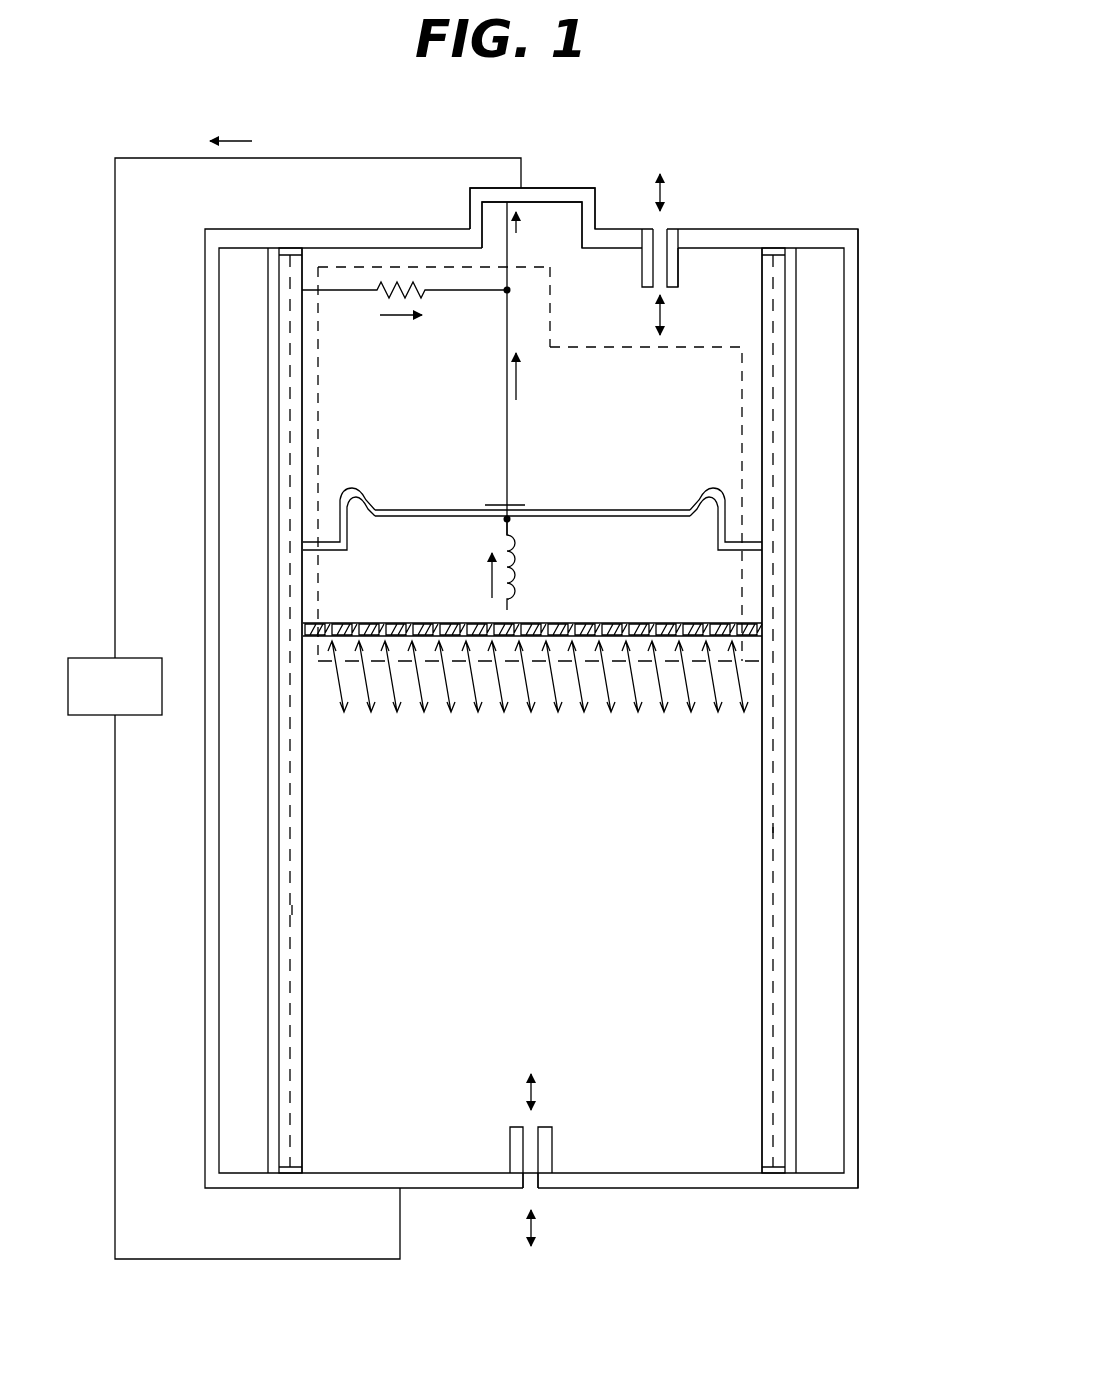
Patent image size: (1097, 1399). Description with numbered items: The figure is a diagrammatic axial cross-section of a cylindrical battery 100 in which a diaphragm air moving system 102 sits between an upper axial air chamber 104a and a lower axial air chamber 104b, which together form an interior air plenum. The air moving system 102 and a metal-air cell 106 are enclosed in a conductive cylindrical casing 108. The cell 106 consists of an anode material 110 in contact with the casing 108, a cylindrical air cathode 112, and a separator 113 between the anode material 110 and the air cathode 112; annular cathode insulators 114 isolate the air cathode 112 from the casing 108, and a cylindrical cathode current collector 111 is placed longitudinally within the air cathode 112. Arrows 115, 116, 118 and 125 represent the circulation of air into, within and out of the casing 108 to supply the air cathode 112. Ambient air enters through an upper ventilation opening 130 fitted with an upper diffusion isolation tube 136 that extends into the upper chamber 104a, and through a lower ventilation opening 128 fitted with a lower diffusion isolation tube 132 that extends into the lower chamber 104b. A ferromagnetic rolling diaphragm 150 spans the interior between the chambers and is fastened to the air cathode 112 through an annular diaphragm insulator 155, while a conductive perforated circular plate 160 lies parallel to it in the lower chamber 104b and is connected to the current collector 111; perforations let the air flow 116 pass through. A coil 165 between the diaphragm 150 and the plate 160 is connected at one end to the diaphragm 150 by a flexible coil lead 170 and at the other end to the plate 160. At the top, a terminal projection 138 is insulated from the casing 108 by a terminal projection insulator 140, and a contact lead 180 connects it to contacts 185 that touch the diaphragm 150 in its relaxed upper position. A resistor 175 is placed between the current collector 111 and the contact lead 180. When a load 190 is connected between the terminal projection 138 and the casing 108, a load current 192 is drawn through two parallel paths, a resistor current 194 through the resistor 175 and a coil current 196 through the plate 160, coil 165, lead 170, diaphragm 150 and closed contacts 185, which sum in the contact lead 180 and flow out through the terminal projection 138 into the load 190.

The cylindrical battery 100 is at (782, 135).
The diaphragm air moving system 102 is at (557, 275).
The upper axial air chamber 104a is at (685, 423).
The lower axial air chamber 104b is at (565, 875).
The metal-air cell 106 is at (318, 1010).
The conductive cylindrical casing 108 is at (858, 430).
The anode material 110 is at (232, 868).
The cathode current collector 111 is at (292, 910).
The air cathode 112 is at (300, 1103).
The separator 113 is at (277, 1057).
The annular cathode insulator 114 is at (292, 257).
The air flow arrow 115 is at (527, 1232).
The air flow 116 is at (547, 682).
The air flow arrow 118 is at (657, 315).
The air flow arrow 125 is at (664, 190).
The lower ventilation opening 128 is at (530, 1188).
The upper ventilation opening 130 is at (662, 230).
The lower diffusion isolation tube 132 is at (552, 1157).
The upper diffusion isolation tube 136 is at (680, 267).
The terminal projection 138 is at (570, 187).
The terminal projection insulator 140 is at (470, 225).
The ferromagnetic rolling diaphragm 150 is at (595, 510).
The annular diaphragm insulator 155 is at (308, 552).
The perforated circular plate 160 is at (455, 622).
The coil 165 is at (520, 548).
The flexible coil lead 170 is at (497, 530).
The resistor 175 is at (377, 285).
The contact lead 180 is at (505, 405).
The contacts 185 is at (503, 505).
The load 190 is at (133, 658).
The load current 192 is at (240, 148).
The resistor current 194 is at (407, 317).
The coil current 196 is at (518, 370).